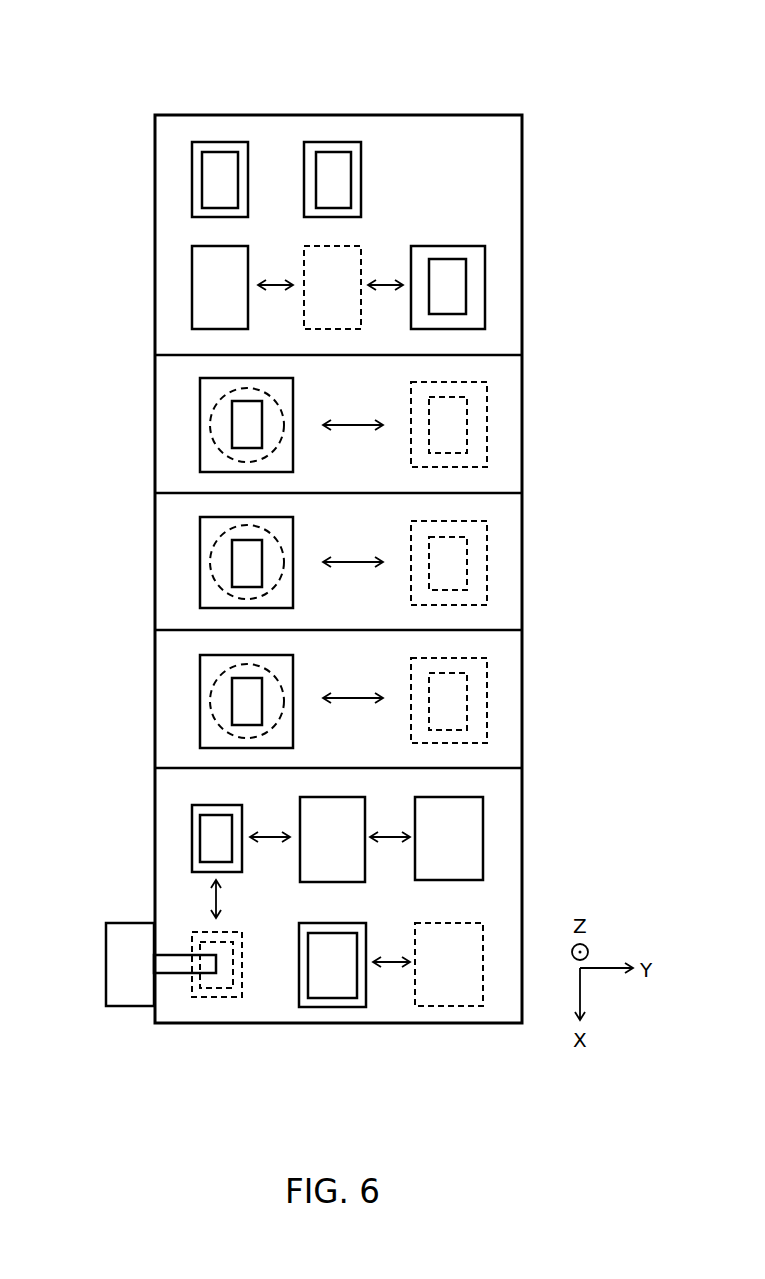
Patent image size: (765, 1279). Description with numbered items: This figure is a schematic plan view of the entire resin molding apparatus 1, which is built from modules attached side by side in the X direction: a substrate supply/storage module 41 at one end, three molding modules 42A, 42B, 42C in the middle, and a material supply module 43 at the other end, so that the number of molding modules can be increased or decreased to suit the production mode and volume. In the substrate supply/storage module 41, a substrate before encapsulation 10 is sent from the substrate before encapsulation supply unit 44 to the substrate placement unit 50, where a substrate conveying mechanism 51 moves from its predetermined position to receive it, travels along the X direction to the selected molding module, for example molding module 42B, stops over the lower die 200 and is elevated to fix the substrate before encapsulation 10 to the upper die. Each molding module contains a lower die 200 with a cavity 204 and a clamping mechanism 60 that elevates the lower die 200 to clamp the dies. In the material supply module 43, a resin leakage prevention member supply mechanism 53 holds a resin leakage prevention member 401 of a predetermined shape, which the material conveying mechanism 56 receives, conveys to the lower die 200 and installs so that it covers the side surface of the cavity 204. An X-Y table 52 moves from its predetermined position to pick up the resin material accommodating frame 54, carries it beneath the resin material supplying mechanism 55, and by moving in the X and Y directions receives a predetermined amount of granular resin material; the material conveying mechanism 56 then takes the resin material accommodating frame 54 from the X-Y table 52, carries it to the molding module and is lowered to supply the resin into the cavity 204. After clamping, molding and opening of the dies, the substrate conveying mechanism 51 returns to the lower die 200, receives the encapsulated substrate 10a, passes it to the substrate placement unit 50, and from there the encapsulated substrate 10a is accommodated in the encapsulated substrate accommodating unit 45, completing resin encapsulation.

The resin molding apparatus 1 is at (458, 72).
The substrate before encapsulation 10 is at (218, 180).
The encapsulated substrate 10a is at (333, 180).
The substrate supply/storage module 41 is at (503, 187).
The molding module 42A is at (503, 368).
The molding module 42B is at (503, 490).
The molding module 42C is at (503, 652).
The material supply module 43 is at (503, 805).
The substrate before encapsulation supply unit 44 is at (195, 180).
The encapsulated substrate accommodating unit 45 is at (358, 180).
The substrate placement unit 50 is at (208, 292).
The substrate conveying mechanism 51 is at (478, 292).
The X-Y table 52 is at (318, 811).
The resin leakage prevention member supply mechanism 53 is at (360, 980).
The resin material accommodating frame 54 is at (193, 840).
The resin material supplying mechanism 55 is at (122, 1015).
The material conveying mechanism 56 is at (450, 838).
The clamping mechanism 60 is at (238, 594).
The lower die 200 is at (210, 533).
The cavity 204 is at (243, 563).
The resin leakage prevention member 401 is at (326, 978).